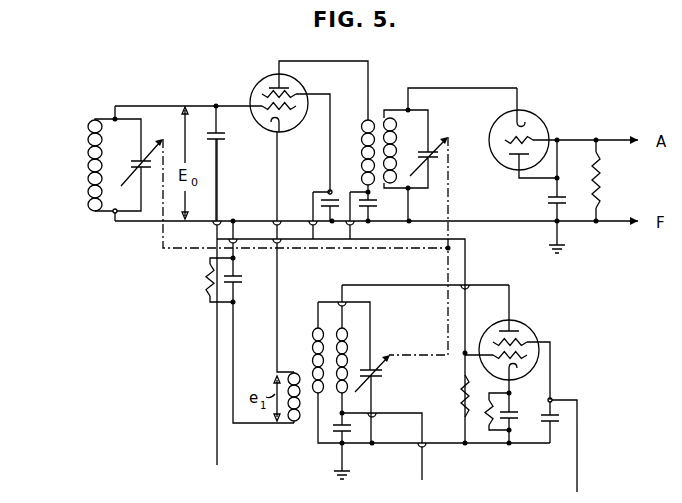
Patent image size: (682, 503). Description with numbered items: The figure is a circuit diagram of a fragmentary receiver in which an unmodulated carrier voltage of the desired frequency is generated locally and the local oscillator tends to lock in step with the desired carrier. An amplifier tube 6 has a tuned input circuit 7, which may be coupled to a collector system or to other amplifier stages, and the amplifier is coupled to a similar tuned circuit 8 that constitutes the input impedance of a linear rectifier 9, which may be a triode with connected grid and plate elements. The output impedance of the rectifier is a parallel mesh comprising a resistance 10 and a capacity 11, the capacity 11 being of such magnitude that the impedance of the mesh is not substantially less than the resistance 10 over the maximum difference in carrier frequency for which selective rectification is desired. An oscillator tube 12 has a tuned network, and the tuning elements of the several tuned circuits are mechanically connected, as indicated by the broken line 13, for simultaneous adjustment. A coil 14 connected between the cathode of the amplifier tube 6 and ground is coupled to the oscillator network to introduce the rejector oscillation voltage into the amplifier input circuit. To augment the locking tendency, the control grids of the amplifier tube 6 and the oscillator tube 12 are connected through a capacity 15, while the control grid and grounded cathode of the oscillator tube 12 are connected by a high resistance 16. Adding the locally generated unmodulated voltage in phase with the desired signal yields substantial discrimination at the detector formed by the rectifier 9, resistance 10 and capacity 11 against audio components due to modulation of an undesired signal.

The amplifier tube 6 is at (258, 79).
The tuned input circuit 7 is at (125, 163).
The tuned circuit 8 is at (451, 154).
The linear rectifier 9 is at (533, 119).
The resistance 10 is at (600, 180).
The capacity 11 is at (547, 199).
The oscillator tube 12 is at (520, 324).
The broken line 13 is at (360, 250).
The coil 14 is at (293, 428).
The capacity 15 is at (219, 139).
The high resistance 16 is at (460, 392).